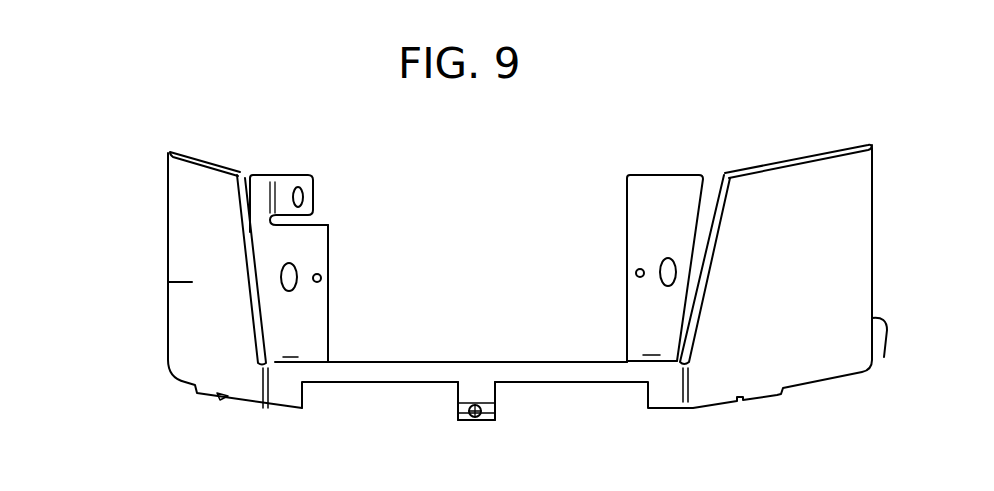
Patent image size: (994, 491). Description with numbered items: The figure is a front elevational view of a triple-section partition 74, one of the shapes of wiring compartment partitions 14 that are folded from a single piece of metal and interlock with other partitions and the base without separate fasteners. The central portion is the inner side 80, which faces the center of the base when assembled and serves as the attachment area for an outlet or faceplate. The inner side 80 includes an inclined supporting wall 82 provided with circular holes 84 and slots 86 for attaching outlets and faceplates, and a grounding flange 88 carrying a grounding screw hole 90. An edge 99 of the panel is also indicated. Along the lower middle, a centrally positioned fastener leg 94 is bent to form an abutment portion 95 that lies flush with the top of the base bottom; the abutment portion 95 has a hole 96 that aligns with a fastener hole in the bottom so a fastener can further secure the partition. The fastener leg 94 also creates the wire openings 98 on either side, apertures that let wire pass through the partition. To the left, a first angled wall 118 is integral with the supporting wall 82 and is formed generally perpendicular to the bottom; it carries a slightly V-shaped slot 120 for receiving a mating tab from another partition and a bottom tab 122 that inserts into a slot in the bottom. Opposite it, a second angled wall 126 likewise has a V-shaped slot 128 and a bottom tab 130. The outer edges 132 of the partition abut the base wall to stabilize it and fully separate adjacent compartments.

The partition 14 is at (152, 159).
The triple-section partition 74 is at (788, 161).
The inner side 80 is at (636, 175).
The supporting wall 82 is at (318, 321).
The circular hole 84 is at (322, 280).
The slot 86 is at (297, 268).
The grounding flange 88 is at (300, 174).
The grounding screw hole 90 is at (302, 195).
The fastener leg 94 is at (500, 396).
The abutment portion 95 is at (455, 405).
The hole 96 is at (474, 420).
The wire opening 98 is at (312, 396).
The edge 99 is at (626, 190).
The first angled wall 118 is at (167, 284).
The slot 120 is at (246, 166).
The bottom tab 122 is at (207, 396).
The second angled wall 126 is at (825, 304).
The slot 128 is at (716, 174).
The bottom tab 130 is at (765, 400).
The edge 132 is at (167, 258).